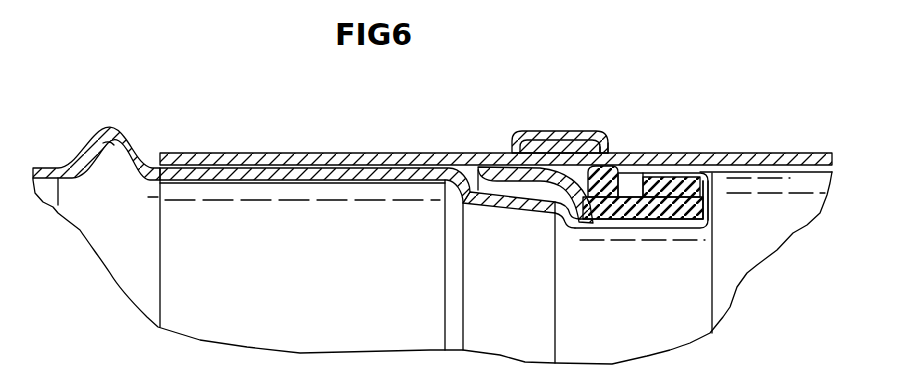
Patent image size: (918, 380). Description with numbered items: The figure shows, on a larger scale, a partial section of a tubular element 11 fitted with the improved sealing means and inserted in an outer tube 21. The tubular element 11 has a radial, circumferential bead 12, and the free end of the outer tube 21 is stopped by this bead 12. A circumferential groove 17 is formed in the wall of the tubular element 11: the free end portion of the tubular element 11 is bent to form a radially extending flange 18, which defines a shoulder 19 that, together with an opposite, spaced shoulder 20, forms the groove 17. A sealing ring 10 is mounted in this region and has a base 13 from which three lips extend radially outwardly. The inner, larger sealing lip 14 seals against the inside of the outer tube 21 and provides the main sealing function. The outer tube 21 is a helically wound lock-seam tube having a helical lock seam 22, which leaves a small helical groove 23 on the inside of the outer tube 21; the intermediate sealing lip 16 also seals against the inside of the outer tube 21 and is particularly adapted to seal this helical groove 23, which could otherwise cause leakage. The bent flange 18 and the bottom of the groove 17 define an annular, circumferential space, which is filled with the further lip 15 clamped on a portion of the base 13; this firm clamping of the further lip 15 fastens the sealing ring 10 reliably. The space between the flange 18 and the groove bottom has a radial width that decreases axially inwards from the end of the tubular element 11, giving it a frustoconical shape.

The sealing ring 10 is at (540, 193).
The tubular element 11 is at (283, 180).
The bead 12 is at (100, 130).
The base 13 is at (658, 219).
The sealing lip 14 is at (490, 203).
The further lip 15 is at (673, 190).
The intermediate sealing lip 16 is at (605, 172).
The circumferential groove 17 is at (620, 220).
The flange 18 is at (652, 168).
The shoulder 19 is at (710, 216).
The shoulder 20 is at (577, 227).
The outer tube 21 is at (314, 157).
The helical lock seam 22 is at (527, 131).
The helical groove 23 is at (612, 145).